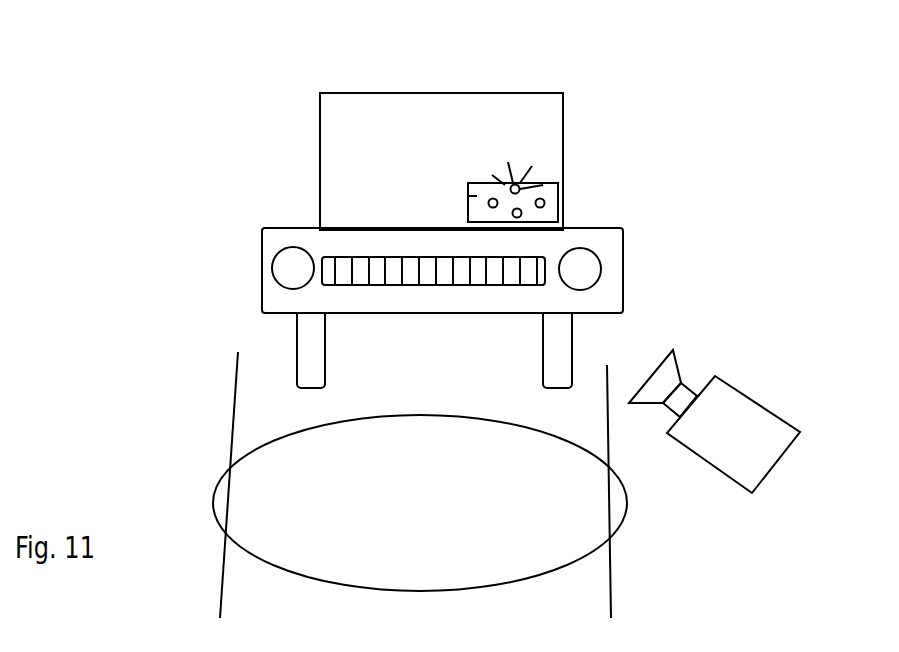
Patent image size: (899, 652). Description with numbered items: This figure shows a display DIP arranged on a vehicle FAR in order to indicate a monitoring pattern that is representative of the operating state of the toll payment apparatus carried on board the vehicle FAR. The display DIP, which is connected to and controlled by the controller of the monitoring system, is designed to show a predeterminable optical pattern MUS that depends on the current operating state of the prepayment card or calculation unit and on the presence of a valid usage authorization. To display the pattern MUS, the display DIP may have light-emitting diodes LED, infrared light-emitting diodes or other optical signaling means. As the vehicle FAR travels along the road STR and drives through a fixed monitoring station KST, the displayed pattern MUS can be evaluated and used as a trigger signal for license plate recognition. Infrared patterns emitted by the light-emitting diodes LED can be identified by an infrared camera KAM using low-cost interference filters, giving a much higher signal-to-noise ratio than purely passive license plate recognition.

The vehicle FAR is at (371, 71).
The optical pattern MUS is at (554, 191).
The light-emitting diodes LED is at (545, 204).
The display DIP is at (477, 197).
The road STR is at (252, 405).
The fixed monitoring station KST is at (420, 503).
The infrared camera KAM is at (738, 413).